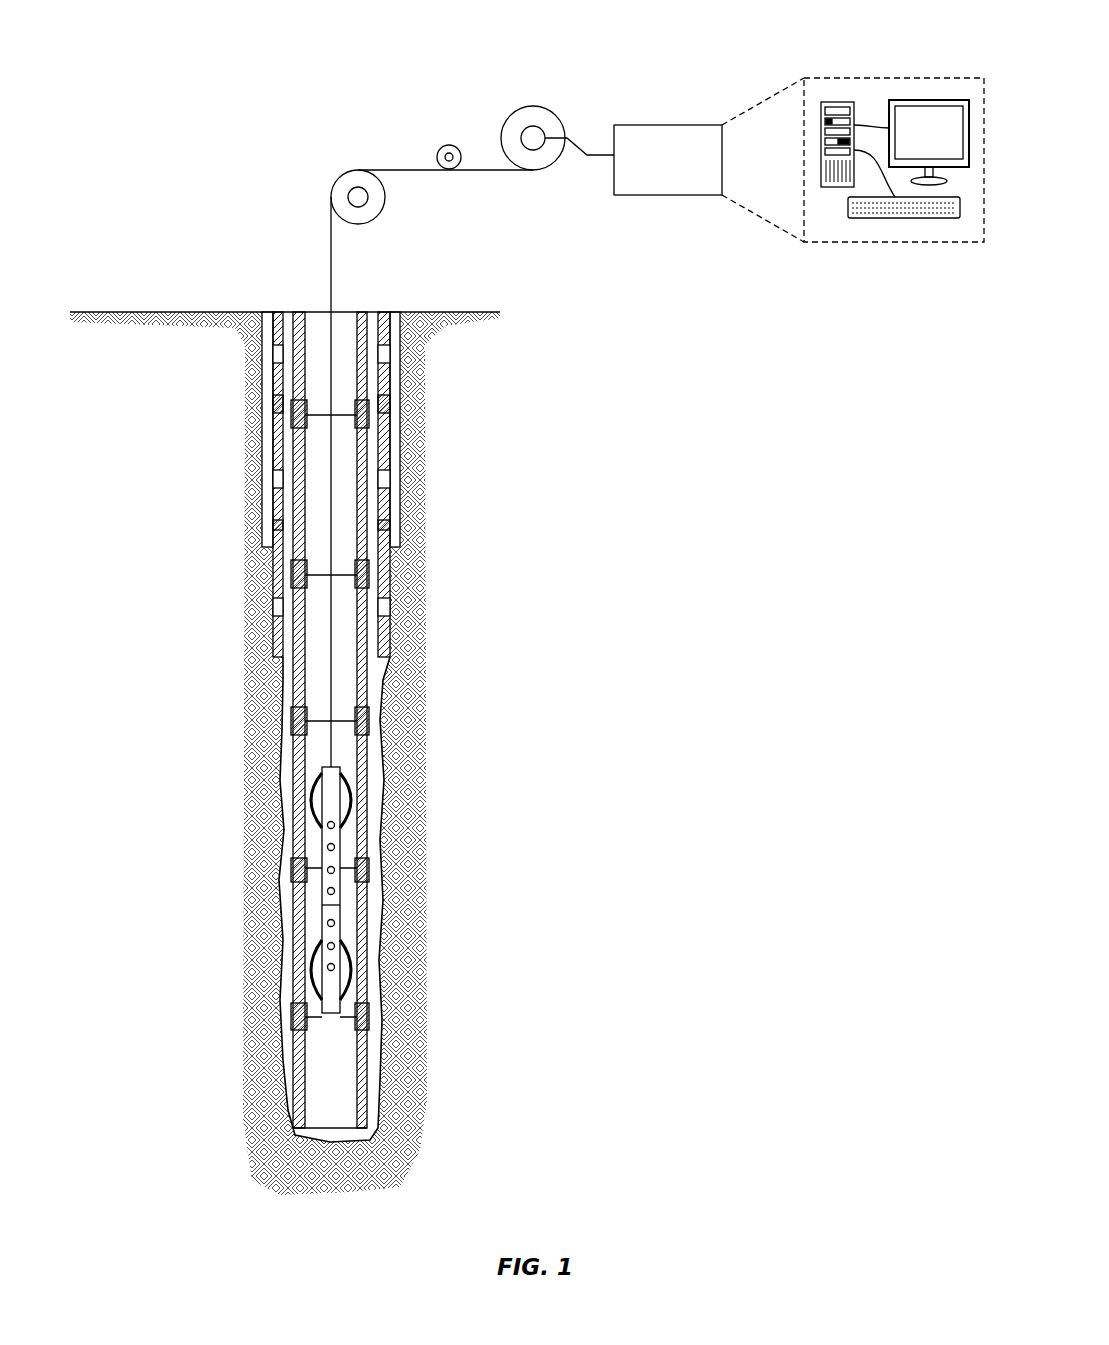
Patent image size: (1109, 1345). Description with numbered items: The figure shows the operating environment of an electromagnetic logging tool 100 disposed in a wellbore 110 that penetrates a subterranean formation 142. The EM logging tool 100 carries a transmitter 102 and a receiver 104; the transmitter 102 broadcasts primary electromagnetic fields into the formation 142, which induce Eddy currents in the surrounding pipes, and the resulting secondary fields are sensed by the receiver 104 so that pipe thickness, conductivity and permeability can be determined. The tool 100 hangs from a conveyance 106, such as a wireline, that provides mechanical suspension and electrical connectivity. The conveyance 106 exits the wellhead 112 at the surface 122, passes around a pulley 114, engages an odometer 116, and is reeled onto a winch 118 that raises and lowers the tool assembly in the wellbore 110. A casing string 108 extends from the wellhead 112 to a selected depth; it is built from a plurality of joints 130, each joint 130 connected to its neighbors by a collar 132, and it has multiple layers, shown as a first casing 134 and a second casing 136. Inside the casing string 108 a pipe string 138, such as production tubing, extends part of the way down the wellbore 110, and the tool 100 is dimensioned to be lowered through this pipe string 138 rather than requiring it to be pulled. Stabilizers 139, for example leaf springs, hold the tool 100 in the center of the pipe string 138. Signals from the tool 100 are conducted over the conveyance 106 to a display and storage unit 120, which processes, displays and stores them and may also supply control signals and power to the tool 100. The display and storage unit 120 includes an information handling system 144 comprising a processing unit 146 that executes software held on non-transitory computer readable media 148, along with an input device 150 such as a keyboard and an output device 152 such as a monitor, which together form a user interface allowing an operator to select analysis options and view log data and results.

The EM logging tool 100 is at (322, 1000).
The transmitter 102 is at (338, 825).
The receiver 104 is at (338, 847).
The conveyance 106 is at (331, 272).
The casing string 108 is at (258, 536).
The wellbore 110 is at (375, 672).
The wellhead 112 is at (320, 305).
The pulley 114 is at (345, 185).
The odometer 116 is at (450, 145).
The winch 118 is at (548, 108).
The display and storage unit 120 is at (678, 125).
The surface 122 is at (115, 312).
The joint 130 is at (273, 340).
The collar 132 is at (273, 370).
The first casing 134 is at (380, 576).
The second casing 136 is at (392, 518).
The pipe string 138 is at (372, 1090).
The stabilizer 139 is at (350, 792).
The subterranean formation 142 is at (617, 654).
The information handling system 144 is at (875, 78).
The processing unit 146 is at (838, 192).
The non-transitory computer readable media 148 is at (838, 102).
The input device 150 is at (900, 218).
The output device 152 is at (928, 100).